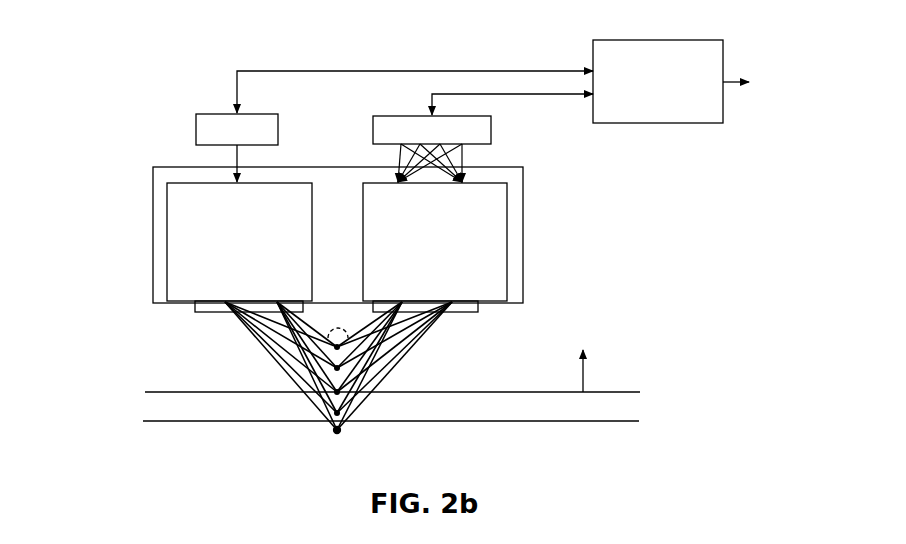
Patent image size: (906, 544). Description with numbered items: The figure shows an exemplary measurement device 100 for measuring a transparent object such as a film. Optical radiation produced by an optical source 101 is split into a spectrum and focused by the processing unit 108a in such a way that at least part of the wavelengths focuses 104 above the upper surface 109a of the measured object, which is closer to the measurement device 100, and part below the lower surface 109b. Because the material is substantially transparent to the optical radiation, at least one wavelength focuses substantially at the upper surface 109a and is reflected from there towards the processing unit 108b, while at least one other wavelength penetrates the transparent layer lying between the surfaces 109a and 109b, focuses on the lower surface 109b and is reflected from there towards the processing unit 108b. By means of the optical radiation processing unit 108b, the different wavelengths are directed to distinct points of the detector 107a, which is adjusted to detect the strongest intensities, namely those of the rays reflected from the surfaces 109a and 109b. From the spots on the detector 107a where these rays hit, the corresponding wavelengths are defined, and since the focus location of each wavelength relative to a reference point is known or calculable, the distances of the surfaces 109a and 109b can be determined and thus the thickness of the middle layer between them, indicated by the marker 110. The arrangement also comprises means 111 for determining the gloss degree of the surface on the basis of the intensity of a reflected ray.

The measurement device 100 is at (124, 57).
The optical source 101 is at (394, 126).
The detector 107a is at (483, 138).
The processing unit 108a is at (252, 306).
The processing unit 108b is at (417, 306).
The means for determining the gloss degree 111 is at (670, 81).
The upper surface 109a is at (371, 367).
The lower surface 109b is at (366, 443).
The layer thickness direction 110 is at (601, 364).
The focus 104 is at (338, 433).